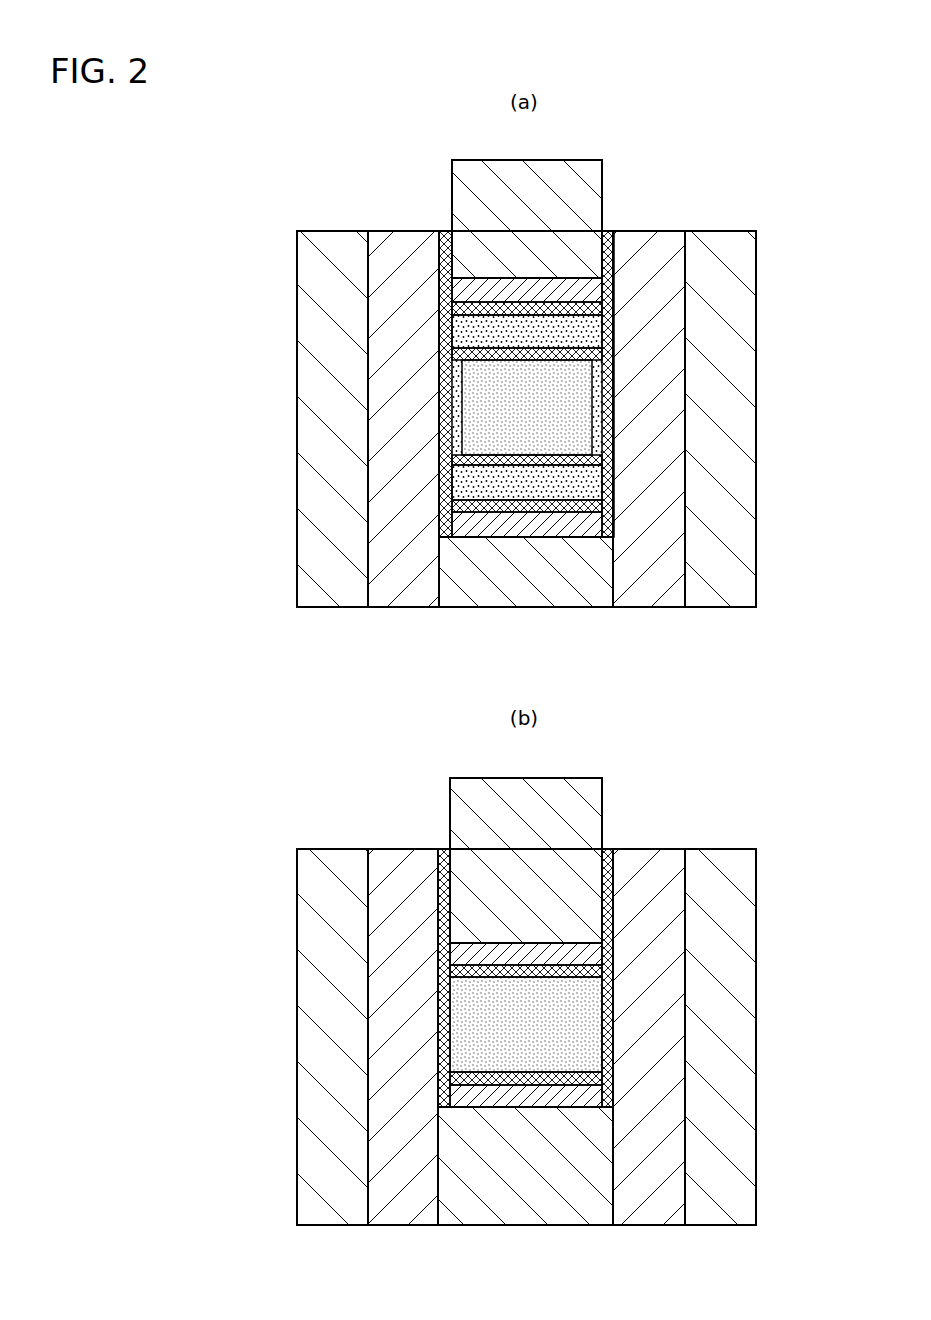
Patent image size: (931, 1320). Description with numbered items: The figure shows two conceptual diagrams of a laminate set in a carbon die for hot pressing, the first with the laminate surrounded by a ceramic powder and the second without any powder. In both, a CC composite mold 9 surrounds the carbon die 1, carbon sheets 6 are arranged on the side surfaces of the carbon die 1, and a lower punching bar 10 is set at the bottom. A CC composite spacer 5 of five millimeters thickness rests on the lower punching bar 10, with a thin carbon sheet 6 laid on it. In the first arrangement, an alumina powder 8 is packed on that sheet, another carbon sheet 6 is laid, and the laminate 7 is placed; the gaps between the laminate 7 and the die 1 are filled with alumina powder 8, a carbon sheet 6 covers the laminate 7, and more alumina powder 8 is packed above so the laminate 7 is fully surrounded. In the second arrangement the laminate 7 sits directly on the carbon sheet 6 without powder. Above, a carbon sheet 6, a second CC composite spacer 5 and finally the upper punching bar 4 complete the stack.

The carbon die 1 is at (405, 325).
The upper punching bar 4 is at (590, 202).
The CC composite spacer 5 is at (465, 292).
The carbon sheet 6 is at (445, 503).
The laminate 7 is at (545, 427).
The alumina powder 8 is at (450, 480).
The CC composite mold 9 is at (335, 461).
The lower punching bar 10 is at (545, 582).